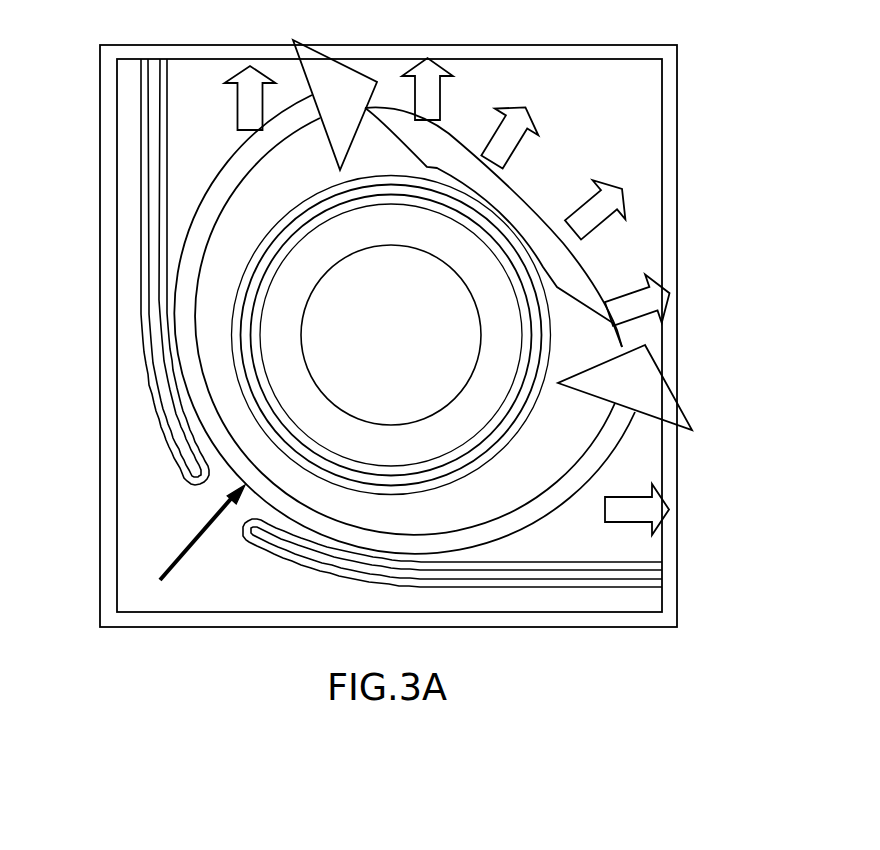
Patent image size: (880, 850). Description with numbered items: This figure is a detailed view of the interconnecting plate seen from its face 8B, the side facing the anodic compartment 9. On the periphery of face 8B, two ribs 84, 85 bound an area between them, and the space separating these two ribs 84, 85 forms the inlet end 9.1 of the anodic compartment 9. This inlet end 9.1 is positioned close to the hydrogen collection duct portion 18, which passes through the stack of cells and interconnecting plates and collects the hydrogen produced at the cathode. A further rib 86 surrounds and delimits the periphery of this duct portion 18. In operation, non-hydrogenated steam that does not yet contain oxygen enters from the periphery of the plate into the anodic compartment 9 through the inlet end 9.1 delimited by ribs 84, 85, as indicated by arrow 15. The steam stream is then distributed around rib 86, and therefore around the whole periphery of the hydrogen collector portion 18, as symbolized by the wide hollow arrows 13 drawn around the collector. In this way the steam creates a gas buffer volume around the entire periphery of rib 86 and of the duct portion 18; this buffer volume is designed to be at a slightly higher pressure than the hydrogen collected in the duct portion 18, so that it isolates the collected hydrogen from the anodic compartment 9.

The housing plate 8B is at (217, 575).
The spiral flow channel 9 is at (270, 204).
The spiral channel inlet 9.1 is at (218, 492).
The flow direction arrows 13 is at (510, 142).
The inflow direction arrow 15 is at (177, 562).
The central hub 18 is at (401, 319).
The lower inlet channel 84 is at (603, 573).
The side inlet channel 85 is at (163, 393).
The annular ring wall 86 is at (442, 475).